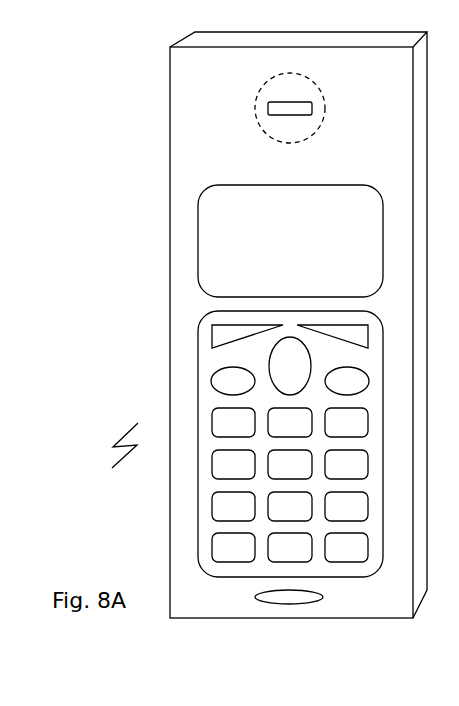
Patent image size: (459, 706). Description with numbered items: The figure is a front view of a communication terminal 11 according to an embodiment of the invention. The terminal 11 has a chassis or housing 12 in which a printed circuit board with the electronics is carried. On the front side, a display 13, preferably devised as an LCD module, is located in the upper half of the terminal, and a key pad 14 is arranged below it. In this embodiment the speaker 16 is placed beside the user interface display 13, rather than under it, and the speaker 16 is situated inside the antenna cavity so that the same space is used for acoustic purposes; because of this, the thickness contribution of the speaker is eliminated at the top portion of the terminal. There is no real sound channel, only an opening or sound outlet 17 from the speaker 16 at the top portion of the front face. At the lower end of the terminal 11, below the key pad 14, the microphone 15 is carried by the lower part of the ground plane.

The communication terminal 11 is at (116, 461).
The housing 12 is at (185, 143).
The display 13 is at (303, 234).
The key pad 14 is at (208, 368).
The microphone 15 is at (282, 605).
The speaker 16 is at (327, 110).
The sound outlet 17 is at (268, 102).